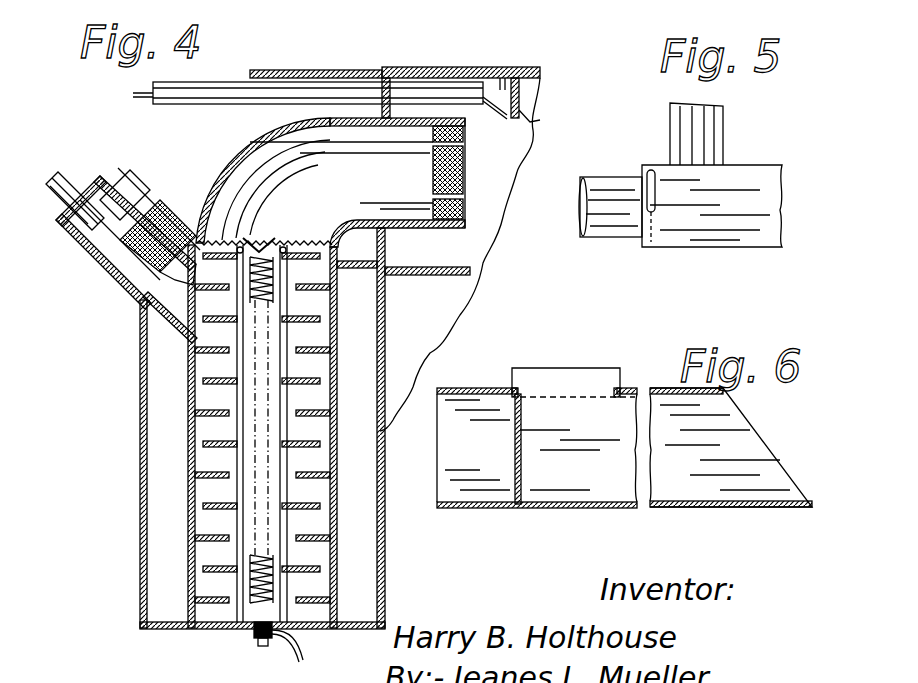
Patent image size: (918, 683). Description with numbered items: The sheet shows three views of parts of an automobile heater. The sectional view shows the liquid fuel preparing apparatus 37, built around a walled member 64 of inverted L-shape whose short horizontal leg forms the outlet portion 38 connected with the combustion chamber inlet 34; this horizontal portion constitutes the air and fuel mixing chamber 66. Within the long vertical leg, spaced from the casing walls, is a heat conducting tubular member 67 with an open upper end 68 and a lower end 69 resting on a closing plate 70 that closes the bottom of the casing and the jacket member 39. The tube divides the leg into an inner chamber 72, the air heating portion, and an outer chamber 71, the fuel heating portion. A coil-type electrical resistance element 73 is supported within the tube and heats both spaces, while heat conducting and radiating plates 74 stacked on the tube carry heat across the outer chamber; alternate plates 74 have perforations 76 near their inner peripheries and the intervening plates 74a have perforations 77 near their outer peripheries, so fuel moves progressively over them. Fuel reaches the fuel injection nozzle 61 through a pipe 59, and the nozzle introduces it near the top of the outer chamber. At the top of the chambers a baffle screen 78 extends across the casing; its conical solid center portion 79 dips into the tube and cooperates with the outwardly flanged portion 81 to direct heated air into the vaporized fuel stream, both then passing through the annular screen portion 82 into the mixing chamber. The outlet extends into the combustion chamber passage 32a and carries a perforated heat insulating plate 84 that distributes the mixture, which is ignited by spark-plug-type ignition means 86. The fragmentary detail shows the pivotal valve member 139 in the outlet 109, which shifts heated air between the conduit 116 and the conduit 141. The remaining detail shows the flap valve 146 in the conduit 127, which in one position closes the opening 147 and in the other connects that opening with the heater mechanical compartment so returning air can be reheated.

In FIG. 4, the combustion chamber inlet 34 is at (395, 118).
In FIG. 4, the ignition means 86 is at (519, 128).
In FIG. 4, the combustion chamber passage 32a is at (485, 230).
In FIG. 4, the air and fuel mixing chamber 66 is at (335, 182).
In FIG. 4, the outlet portion 38 is at (434, 228).
In FIG. 4, the perforated heat insulating plate 84 is at (462, 166).
In FIG. 4, the outwardly flanged portion 81 is at (312, 240).
In FIG. 4, the walled member 64 is at (262, 128).
In FIG. 4, the heat conducting tubular member 67 is at (325, 290).
In FIG. 4, the annular screen portion 82 is at (220, 243).
In FIG. 4, the upper end 68 is at (255, 248).
In FIG. 4, the solid center portion 79 is at (267, 240).
In FIG. 4, the baffle screen 78 is at (300, 243).
In FIG. 4, the outer chamber 71 is at (230, 397).
In FIG. 4, the inner chamber 72 is at (247, 417).
In FIG. 4, the electrical resistance element 73 is at (268, 584).
In FIG. 4, the heat conducting and radiating plates 74 is at (383, 453).
In FIG. 4, the perforations 76 is at (376, 462).
In FIG. 4, the alternate plates 74a is at (307, 530).
In FIG. 4, the perforations 77 is at (307, 568).
In FIG. 4, the liquid fuel preparing apparatus 37 is at (185, 393).
In FIG. 4, the jacket member 39 is at (140, 534).
In FIG. 4, the closing plate 70 is at (350, 629).
In FIG. 4, the lower end 69 is at (240, 630).
In FIG. 4, the fuel injection nozzle 61 is at (148, 225).
In FIG. 4, the pipe 59 is at (75, 190).
In FIG. 5, the conduit 116 is at (623, 160).
In FIG. 5, the outlet 109 is at (730, 228).
In FIG. 5, the conduit 141 is at (725, 138).
In FIG. 5, the pivotal valve member 139 is at (657, 207).
In FIG. 6, the conduit 127 is at (577, 506).
In FIG. 6, the opening 147 is at (581, 378).
In FIG. 6, the flap valve 146 is at (522, 458).